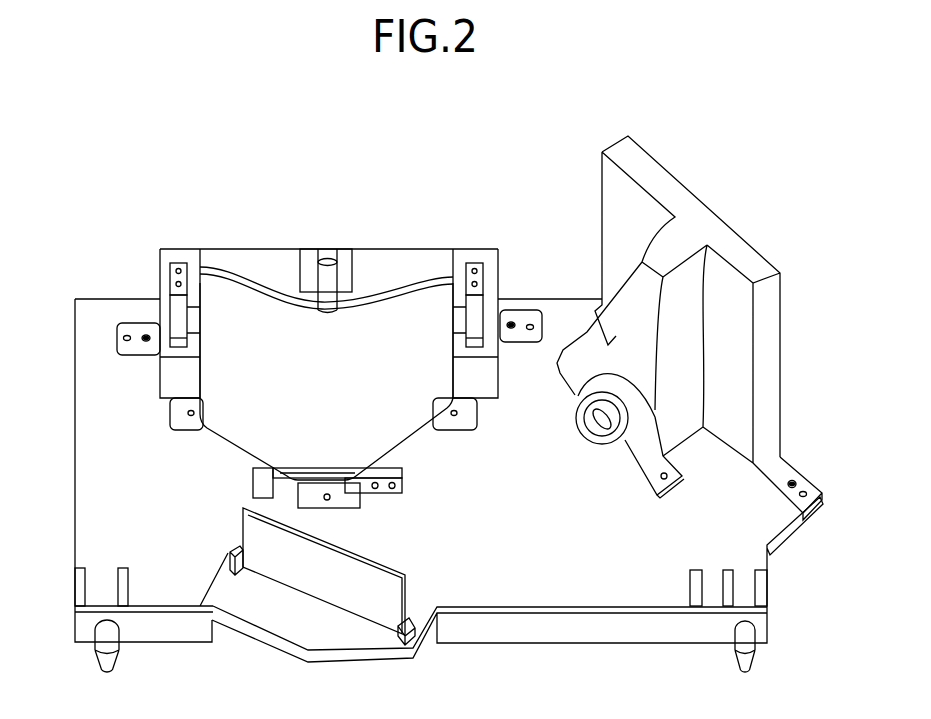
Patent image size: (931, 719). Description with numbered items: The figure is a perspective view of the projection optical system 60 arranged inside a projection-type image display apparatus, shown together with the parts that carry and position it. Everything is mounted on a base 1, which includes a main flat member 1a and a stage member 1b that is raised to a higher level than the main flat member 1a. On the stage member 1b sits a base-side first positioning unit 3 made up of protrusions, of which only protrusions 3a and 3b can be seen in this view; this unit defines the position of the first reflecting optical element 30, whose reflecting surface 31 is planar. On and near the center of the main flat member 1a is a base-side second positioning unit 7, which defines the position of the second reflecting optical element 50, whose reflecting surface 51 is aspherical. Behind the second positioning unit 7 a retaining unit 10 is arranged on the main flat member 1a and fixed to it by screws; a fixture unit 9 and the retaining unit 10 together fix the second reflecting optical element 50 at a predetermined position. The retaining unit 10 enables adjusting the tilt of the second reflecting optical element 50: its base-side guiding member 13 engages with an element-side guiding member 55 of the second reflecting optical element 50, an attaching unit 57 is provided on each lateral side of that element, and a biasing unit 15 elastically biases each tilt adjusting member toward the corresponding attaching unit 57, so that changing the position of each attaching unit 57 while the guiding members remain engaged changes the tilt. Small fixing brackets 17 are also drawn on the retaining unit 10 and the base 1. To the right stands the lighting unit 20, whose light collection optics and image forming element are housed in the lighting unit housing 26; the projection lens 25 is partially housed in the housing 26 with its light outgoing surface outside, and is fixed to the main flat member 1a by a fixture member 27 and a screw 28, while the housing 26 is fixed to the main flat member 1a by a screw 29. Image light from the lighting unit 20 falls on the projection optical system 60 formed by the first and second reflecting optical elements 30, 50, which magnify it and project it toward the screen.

The base 1 is at (422, 499).
The main flat member 1a is at (103, 545).
The stage member 1b is at (300, 635).
The base-side first positioning unit 3 is at (320, 594).
The protrusion 3a is at (228, 572).
The protrusion 3b is at (413, 650).
The base-side second positioning unit 7 is at (402, 470).
The fixture unit 9 is at (345, 500).
The retaining unit 10 is at (321, 303).
The base-side guiding member 13 is at (343, 257).
The biasing unit 15 is at (178, 315).
The fixing bracket 17 is at (127, 340).
The lighting unit 20 is at (706, 325).
The projection lens 25 is at (585, 432).
The lighting unit housing 26 is at (740, 248).
The fixture member 27 is at (654, 470).
The screw 28 is at (672, 482).
The screw 29 is at (808, 490).
The first reflecting optical element 30 is at (361, 571).
The reflecting surface 31 is at (405, 578).
The second reflecting optical element 50 is at (326, 373).
The reflecting surface 51 is at (390, 378).
The element-side guiding member 55 is at (330, 258).
The attaching unit 57 is at (194, 315).
The projection optical system 60 is at (308, 125).